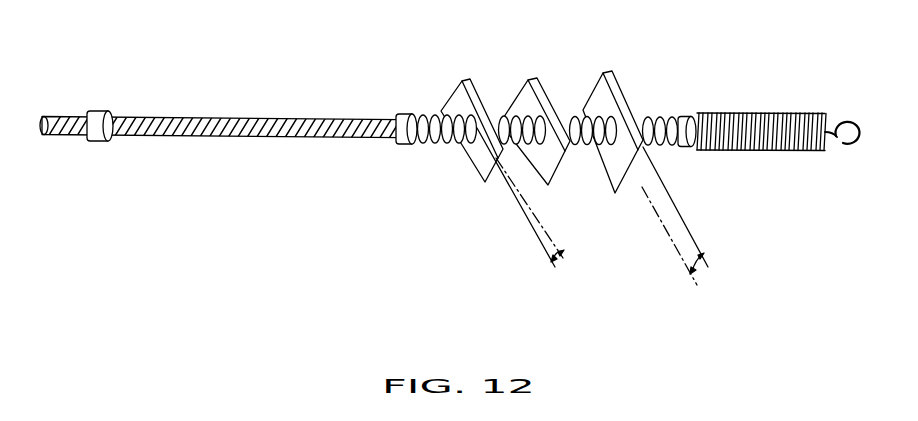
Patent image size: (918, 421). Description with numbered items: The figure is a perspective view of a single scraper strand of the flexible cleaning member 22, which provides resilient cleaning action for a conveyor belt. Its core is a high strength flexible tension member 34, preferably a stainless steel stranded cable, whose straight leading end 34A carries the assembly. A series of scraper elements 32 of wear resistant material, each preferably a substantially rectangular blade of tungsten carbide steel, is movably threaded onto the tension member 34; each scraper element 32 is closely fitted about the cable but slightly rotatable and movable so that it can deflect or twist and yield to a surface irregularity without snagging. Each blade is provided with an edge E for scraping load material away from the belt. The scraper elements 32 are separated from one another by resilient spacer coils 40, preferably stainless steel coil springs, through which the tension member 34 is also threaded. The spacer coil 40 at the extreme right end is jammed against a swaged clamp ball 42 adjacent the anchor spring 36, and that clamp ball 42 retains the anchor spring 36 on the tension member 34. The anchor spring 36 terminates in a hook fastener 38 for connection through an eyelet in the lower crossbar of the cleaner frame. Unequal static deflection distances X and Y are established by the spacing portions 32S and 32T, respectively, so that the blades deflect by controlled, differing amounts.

The flexible cleaning member 22 is at (388, 38).
The scraper element 32 is at (480, 141).
The spacing portion 32S is at (475, 110).
The spacing portion 32T is at (610, 112).
The flexible tension member 34 is at (222, 124).
The leading end of the cable 34A is at (222, 138).
The anchor spring 36 is at (730, 104).
The hook fastener 38 is at (850, 150).
The spacer coil 40 is at (423, 110).
The clamp ball 42 is at (98, 141).
The edge E is at (467, 80).
The static deflection distance X is at (561, 254).
The static deflection distance Y is at (703, 258).